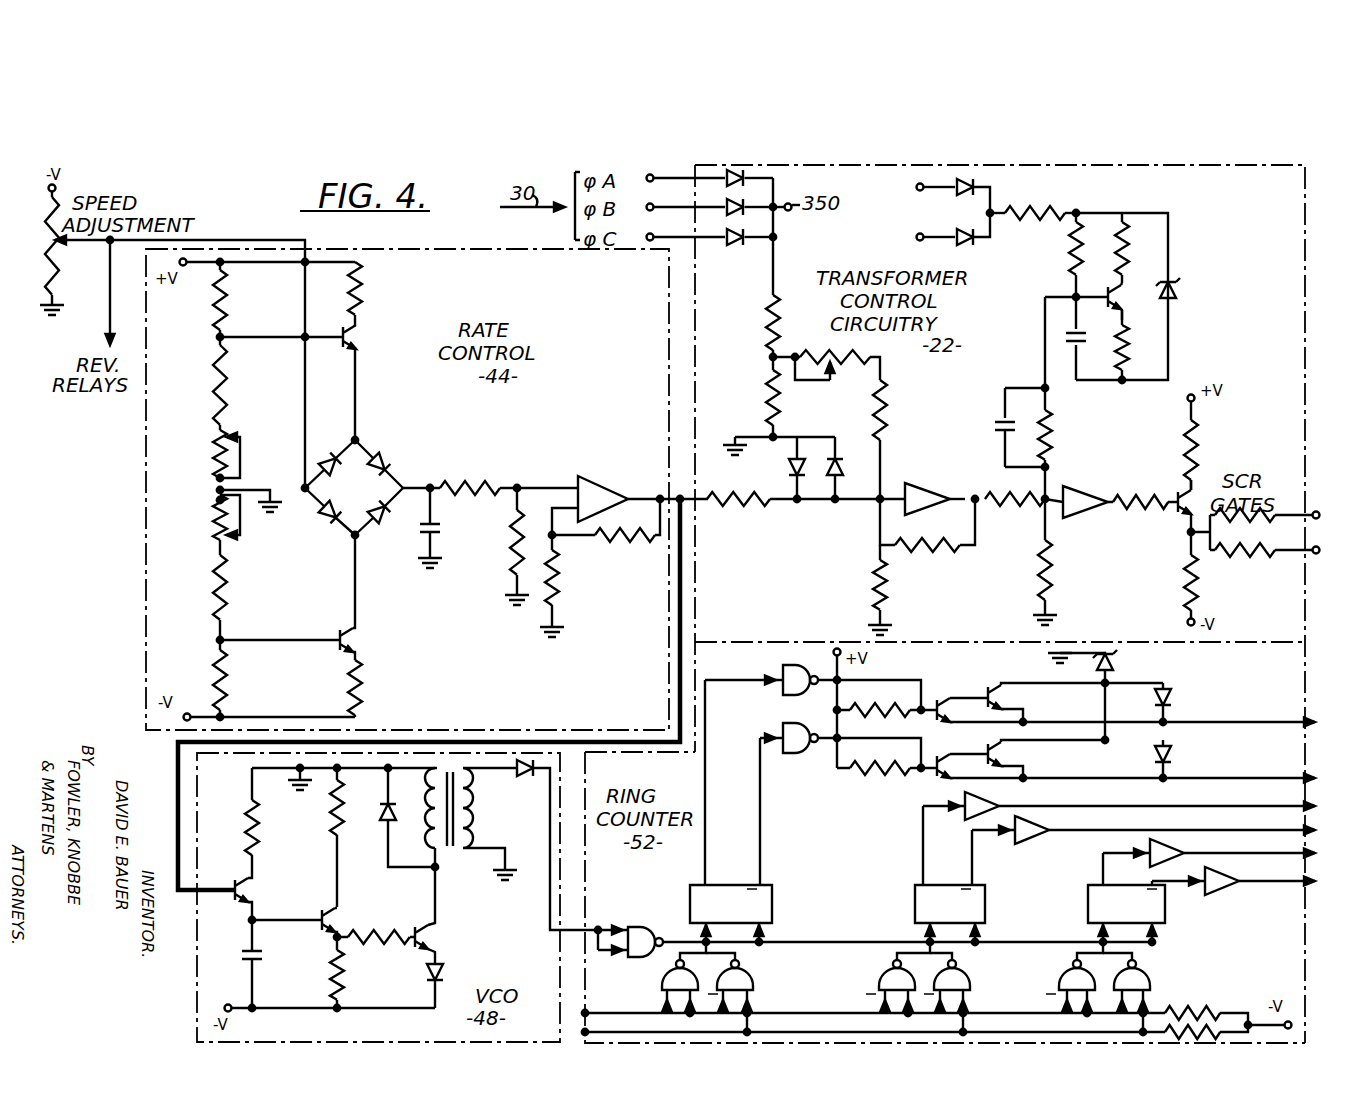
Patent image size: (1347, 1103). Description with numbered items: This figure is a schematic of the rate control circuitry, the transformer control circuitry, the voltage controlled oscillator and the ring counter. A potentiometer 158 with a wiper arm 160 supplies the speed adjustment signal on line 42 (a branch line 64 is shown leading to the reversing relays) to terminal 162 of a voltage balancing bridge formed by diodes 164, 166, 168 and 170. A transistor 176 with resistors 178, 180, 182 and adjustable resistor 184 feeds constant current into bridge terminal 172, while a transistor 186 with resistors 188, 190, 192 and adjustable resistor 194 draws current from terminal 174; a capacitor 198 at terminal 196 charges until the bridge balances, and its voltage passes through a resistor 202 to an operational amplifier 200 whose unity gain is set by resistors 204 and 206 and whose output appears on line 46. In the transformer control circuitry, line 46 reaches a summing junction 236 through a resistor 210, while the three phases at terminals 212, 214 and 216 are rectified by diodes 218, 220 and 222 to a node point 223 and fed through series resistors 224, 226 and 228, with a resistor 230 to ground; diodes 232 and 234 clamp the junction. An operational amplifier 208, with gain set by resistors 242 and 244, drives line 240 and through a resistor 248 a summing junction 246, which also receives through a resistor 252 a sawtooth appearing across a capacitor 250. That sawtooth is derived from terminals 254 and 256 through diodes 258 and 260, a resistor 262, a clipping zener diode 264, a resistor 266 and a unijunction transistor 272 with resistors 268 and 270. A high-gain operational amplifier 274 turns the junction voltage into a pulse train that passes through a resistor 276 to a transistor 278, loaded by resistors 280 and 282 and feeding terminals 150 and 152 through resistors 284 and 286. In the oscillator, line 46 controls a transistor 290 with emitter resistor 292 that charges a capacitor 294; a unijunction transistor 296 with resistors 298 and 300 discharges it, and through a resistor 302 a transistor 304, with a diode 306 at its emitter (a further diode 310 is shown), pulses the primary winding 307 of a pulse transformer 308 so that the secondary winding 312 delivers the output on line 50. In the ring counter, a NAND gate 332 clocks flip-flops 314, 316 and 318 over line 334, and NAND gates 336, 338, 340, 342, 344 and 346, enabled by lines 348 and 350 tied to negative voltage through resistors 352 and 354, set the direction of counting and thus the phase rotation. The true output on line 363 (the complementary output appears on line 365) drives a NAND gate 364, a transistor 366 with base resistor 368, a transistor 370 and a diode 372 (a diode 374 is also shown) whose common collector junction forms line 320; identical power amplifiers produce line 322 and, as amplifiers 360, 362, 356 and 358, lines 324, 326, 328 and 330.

The line 42 is at (250, 244).
The line 46 is at (682, 496).
The line 50 is at (566, 935).
The reversing relay control line 64 is at (110, 306).
The terminal 150 is at (1314, 513).
The terminal 152 is at (1314, 555).
The potentiometer 158 is at (57, 242).
The wiper arm 160 is at (72, 248).
The terminal 162 is at (304, 486).
The diode 164 is at (327, 457).
The diode 166 is at (322, 522).
The diode 168 is at (385, 455).
The diode 170 is at (385, 532).
The terminal 172 is at (367, 437).
The terminal 174 is at (350, 540).
The transistor 176 is at (360, 337).
The resistor 178 is at (359, 292).
The resistor 180 is at (224, 297).
The fixed resistor 182 is at (224, 380).
The adjustable resistor 184 is at (215, 451).
The transistor 186 is at (358, 642).
The resistor 188 is at (360, 686).
The resistor 190 is at (234, 672).
The fixed resistor 192 is at (216, 594).
The adjustable resistor 194 is at (215, 521).
The terminal 196 is at (406, 482).
The capacitor 198 is at (441, 534).
The operational amplifier 200 is at (586, 480).
The resistor 202 is at (470, 482).
The resistor 204 is at (604, 543).
The resistor 206 is at (558, 587).
The operational amplifier 208 is at (915, 476).
The resistor 210 is at (745, 508).
The terminal 212 is at (654, 182).
The terminal 214 is at (648, 213).
The terminal 216 is at (654, 239).
The diode 218 is at (773, 178).
The diode 220 is at (728, 207).
The diode 222 is at (730, 244).
The node point 223 is at (777, 235).
The resistor 224 is at (768, 318).
The resistor 226 is at (835, 352).
The resistor 228 is at (886, 410).
The resistor 230 is at (768, 398).
The diode 232 is at (788, 470).
The diode 234 is at (838, 498).
The summing junction 236 is at (878, 503).
The line 240 is at (985, 488).
The resistor 242 is at (937, 557).
The resistor 244 is at (878, 584).
The summing junction 246 is at (1054, 498).
The resistor 248 is at (1015, 508).
The capacitor 250 is at (1080, 345).
The resistor 252 is at (1048, 437).
The terminal 254 is at (918, 189).
The terminal 256 is at (918, 239).
The diode 258 is at (972, 187).
The diode 260 is at (960, 233).
The resistor 262 is at (1028, 209).
The zener diode 264 is at (1177, 294).
The resistor 266 is at (1074, 244).
The resistor 268 is at (1120, 252).
The resistor 270 is at (1124, 334).
The unijunction transistor 272 is at (1111, 290).
The operational amplifier 274 is at (1068, 527).
The resistor 276 is at (1160, 500).
The transistor 278 is at (1173, 518).
The resistor 280 is at (1187, 440).
The resistor 282 is at (1187, 588).
The resistor 284 is at (1239, 522).
The resistor 286 is at (1250, 559).
The transistor 290 is at (233, 886).
The resistor 292 is at (258, 838).
The capacitor 294 is at (258, 965).
The unijunction transistor 296 is at (320, 918).
The resistor 298 is at (338, 800).
The resistor 300 is at (341, 985).
The resistor 302 is at (400, 937).
The transistor 304 is at (433, 938).
The diode 306 is at (440, 973).
The primary winding 307 is at (434, 782).
The pulse transformer 308 is at (452, 855).
The diode 310 is at (386, 822).
The secondary winding 312 is at (473, 805).
The flip-flop 314 is at (772, 899).
The flip-flop 316 is at (915, 891).
The flip-flop 318 is at (1165, 915).
The line 320 is at (1310, 722).
The line 322 is at (1310, 780).
The line 324 is at (1310, 808).
The line 326 is at (1310, 830).
The line 328 is at (1310, 853).
The line 330 is at (1312, 884).
The NAND gate 332 is at (644, 929).
The line 334 is at (778, 943).
The NAND gate 336 is at (665, 978).
The NAND gate 338 is at (748, 980).
The NAND gate 340 is at (880, 975).
The NAND gate 342 is at (964, 978).
The NAND gate 344 is at (1060, 975).
The NAND gate 346 is at (1144, 978).
The line 348 is at (622, 1003).
The line 350 is at (608, 1034).
The resistor 352 is at (1205, 1005).
The resistor 354 is at (1221, 1038).
The power amplifier 356 is at (1180, 846).
The power amplifier 358 is at (1235, 873).
The power amplifier 360 is at (993, 801).
The power amplifier 362 is at (1043, 825).
The line 363 is at (705, 860).
The NAND gate 364 is at (780, 672).
The line 365 is at (760, 845).
The transistor 366 is at (940, 700).
The resistor 368 is at (853, 708).
The transistor 370 is at (991, 686).
The diode 372 is at (1112, 664).
The diode 374 is at (1170, 698).